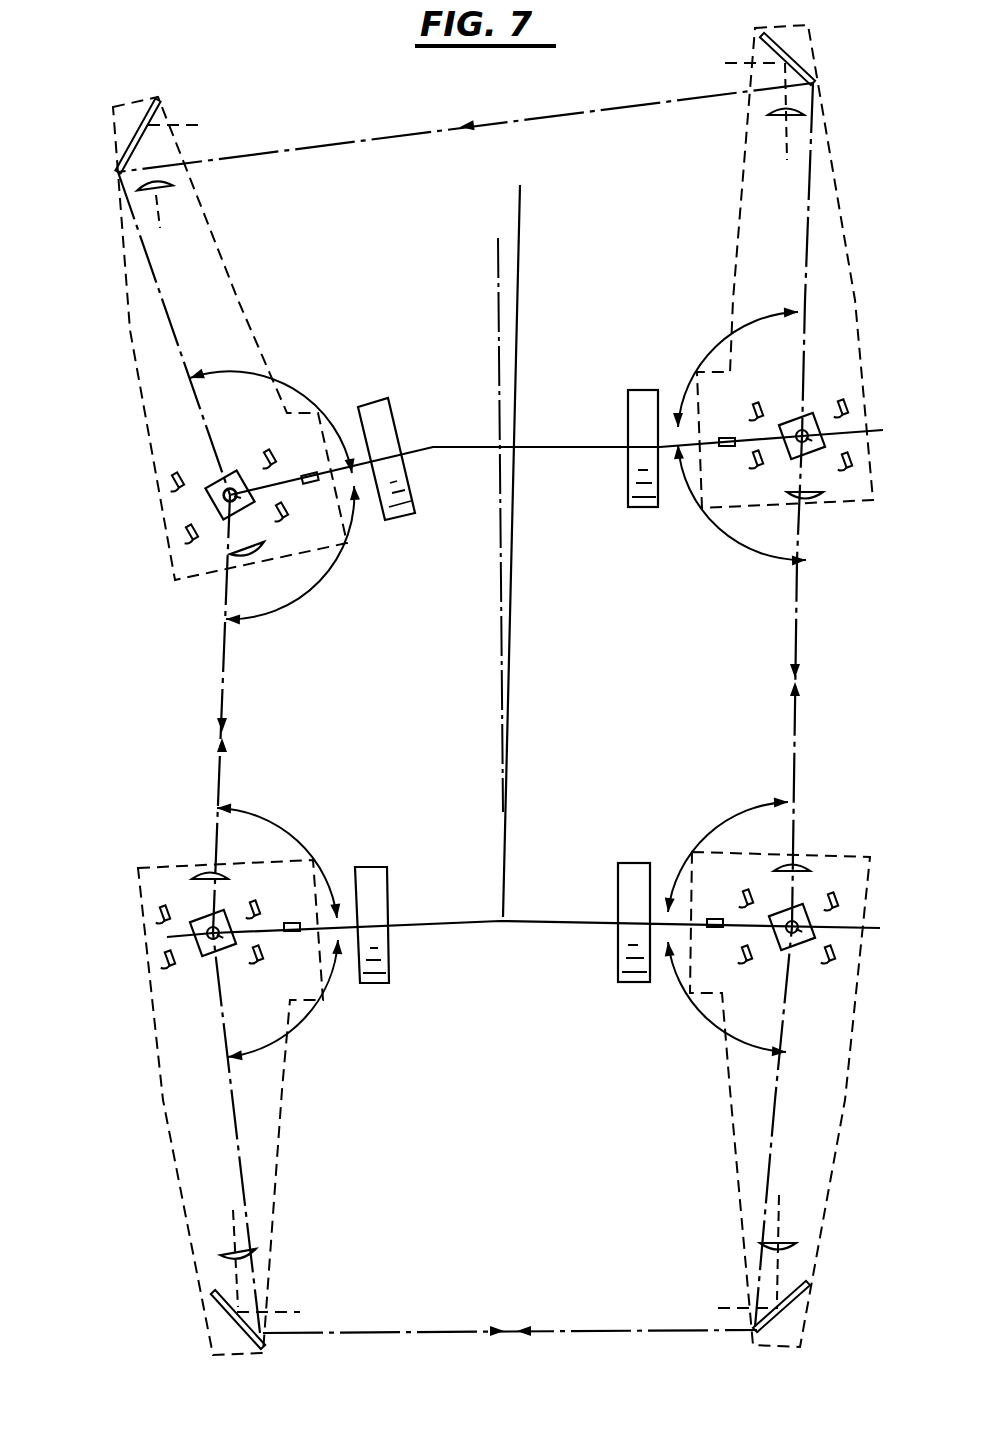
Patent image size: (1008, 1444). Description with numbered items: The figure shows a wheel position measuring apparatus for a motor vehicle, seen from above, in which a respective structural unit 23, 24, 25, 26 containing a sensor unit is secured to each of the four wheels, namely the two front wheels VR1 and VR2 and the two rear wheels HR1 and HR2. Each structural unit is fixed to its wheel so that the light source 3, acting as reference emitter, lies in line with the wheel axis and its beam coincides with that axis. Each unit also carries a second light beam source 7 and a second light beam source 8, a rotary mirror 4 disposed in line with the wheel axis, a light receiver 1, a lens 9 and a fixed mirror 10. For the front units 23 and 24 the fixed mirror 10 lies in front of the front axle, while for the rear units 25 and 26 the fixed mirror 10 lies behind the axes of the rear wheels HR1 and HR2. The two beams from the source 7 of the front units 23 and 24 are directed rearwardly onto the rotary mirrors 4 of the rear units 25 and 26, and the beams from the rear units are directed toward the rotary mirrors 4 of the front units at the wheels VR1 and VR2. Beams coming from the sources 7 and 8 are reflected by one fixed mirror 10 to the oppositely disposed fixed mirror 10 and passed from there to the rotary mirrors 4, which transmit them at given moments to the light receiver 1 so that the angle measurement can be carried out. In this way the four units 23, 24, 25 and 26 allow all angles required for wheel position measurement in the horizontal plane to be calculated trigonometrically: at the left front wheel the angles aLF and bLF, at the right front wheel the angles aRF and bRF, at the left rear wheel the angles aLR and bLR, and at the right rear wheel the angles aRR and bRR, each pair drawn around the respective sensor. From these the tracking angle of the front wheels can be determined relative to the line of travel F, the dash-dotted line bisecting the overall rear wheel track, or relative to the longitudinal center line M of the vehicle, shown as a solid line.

The light receiver 1 is at (207, 498).
The light source 3 is at (320, 482).
The rotary mirror 4 is at (213, 473).
The second light beam source 7 is at (188, 536).
The second light beam source 8 is at (174, 482).
The lens 9 is at (150, 194).
The fixed mirror 10 is at (127, 143).
The structural unit 23 is at (198, 262).
The structural unit 24 is at (748, 228).
The structural unit 25 is at (257, 1165).
The structural unit 26 is at (748, 1142).
The front wheel VR1 is at (388, 428).
The front wheel VR2 is at (630, 418).
The rear wheel HR1 is at (383, 952).
The rear wheel HR2 is at (624, 943).
The line of travel F is at (500, 626).
The longitudinal center line M is at (514, 632).
The measured angle bLF is at (272, 417).
The measured angle aLF is at (299, 555).
The measured angle bRF is at (721, 367).
The measured angle aRF is at (733, 505).
The measured angle aLR is at (279, 861).
The measured angle bLR is at (290, 1001).
The measured angle aRR is at (721, 855).
The measured angle bRR is at (720, 999).